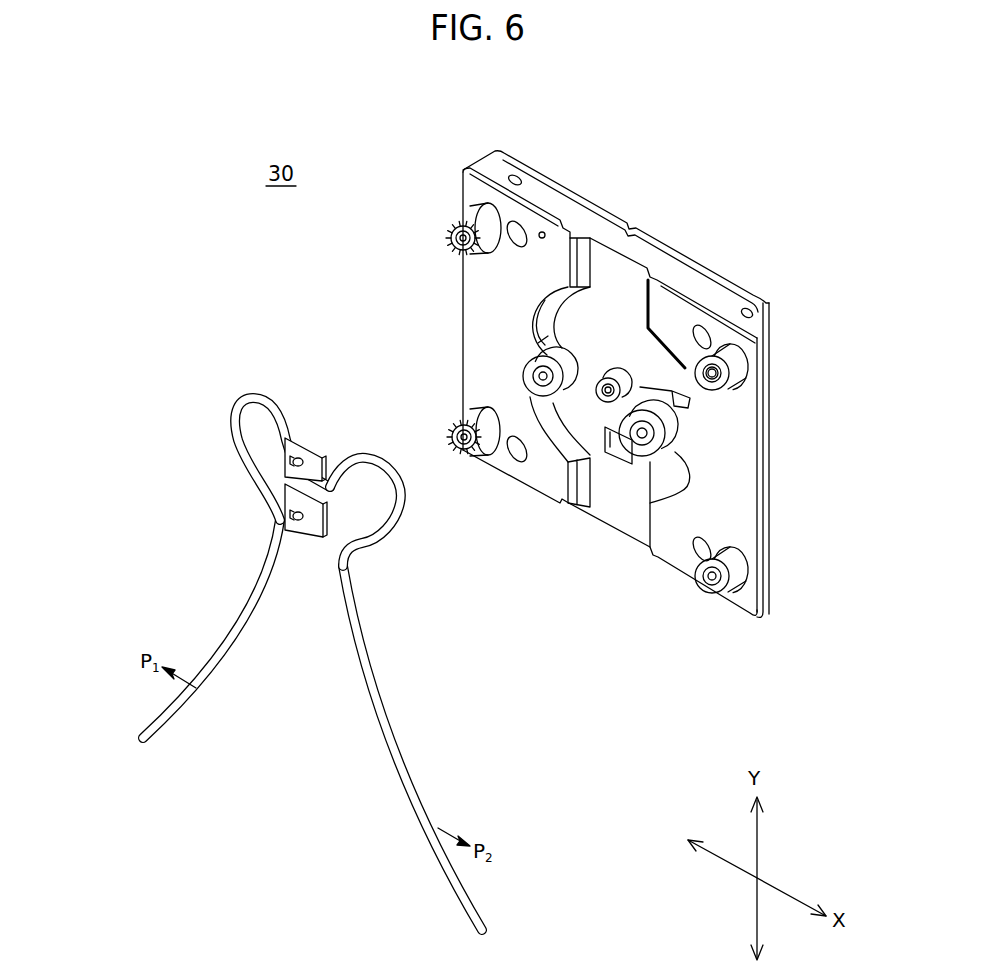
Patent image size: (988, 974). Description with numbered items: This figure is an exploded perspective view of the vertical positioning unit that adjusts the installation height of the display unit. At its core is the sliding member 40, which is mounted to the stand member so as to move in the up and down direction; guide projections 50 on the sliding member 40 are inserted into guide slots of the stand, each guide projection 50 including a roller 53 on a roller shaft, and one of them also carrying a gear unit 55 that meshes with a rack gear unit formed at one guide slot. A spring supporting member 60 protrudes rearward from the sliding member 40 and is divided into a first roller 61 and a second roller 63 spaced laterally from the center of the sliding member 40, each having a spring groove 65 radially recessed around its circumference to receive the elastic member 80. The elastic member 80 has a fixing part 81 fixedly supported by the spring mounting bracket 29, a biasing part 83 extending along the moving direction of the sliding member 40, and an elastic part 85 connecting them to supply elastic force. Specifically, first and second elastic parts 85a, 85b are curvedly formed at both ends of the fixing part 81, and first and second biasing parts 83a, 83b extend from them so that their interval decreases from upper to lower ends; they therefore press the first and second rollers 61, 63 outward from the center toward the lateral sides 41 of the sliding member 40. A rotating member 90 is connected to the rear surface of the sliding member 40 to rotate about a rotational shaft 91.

The spring mounting bracket 29 is at (315, 455).
The sliding member 40 is at (742, 497).
The lateral sides 41 is at (463, 292).
The guide projections 50 is at (470, 215).
The roller 53 is at (722, 388).
The gear unit 55 is at (450, 236).
The spring supporting member 60 is at (695, 435).
The first roller 61 is at (648, 457).
The second roller 63 is at (522, 378).
The spring groove 65 is at (568, 355).
The elastic member 80 is at (140, 502).
The fixing part 81 is at (318, 540).
The biasing part 83 is at (404, 740).
The first biasing part 83a is at (372, 665).
The second biasing part 83b is at (207, 660).
The elastic part 85 is at (408, 535).
The first elastic part 85a is at (400, 490).
The second elastic part 85b is at (230, 410).
The rotating member 90 is at (597, 210).
The rotational shaft 91 is at (615, 378).